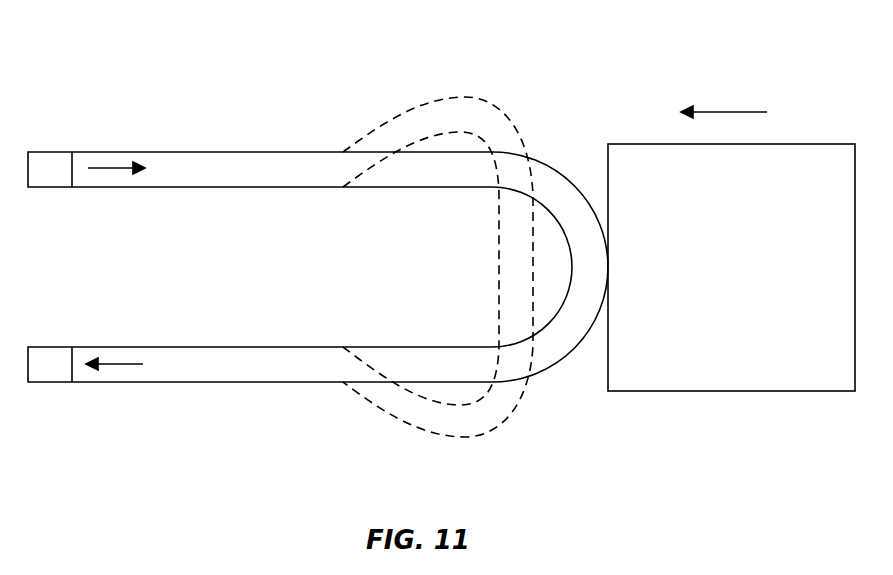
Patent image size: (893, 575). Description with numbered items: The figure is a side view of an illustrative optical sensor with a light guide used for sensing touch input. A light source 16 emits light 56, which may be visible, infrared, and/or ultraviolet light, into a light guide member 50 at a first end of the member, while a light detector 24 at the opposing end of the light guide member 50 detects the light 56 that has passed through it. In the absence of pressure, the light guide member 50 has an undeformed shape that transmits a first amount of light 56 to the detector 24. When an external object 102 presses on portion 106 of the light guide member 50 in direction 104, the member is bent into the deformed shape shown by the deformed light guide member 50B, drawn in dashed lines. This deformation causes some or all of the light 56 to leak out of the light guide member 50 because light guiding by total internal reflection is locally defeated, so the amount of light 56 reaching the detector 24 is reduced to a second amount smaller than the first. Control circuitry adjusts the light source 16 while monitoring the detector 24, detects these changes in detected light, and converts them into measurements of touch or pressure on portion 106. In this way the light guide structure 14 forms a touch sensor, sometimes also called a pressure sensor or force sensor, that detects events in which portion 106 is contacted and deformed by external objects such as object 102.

The light guide structure 14 is at (324, 104).
The light source 16 is at (52, 157).
The light detector 24 is at (53, 372).
The light guide member 50 is at (285, 383).
The deformed light guide member 50B is at (473, 97).
The light 56 is at (115, 167).
The external object 102 is at (737, 392).
The direction 104 is at (732, 111).
The portion 106 is at (590, 251).